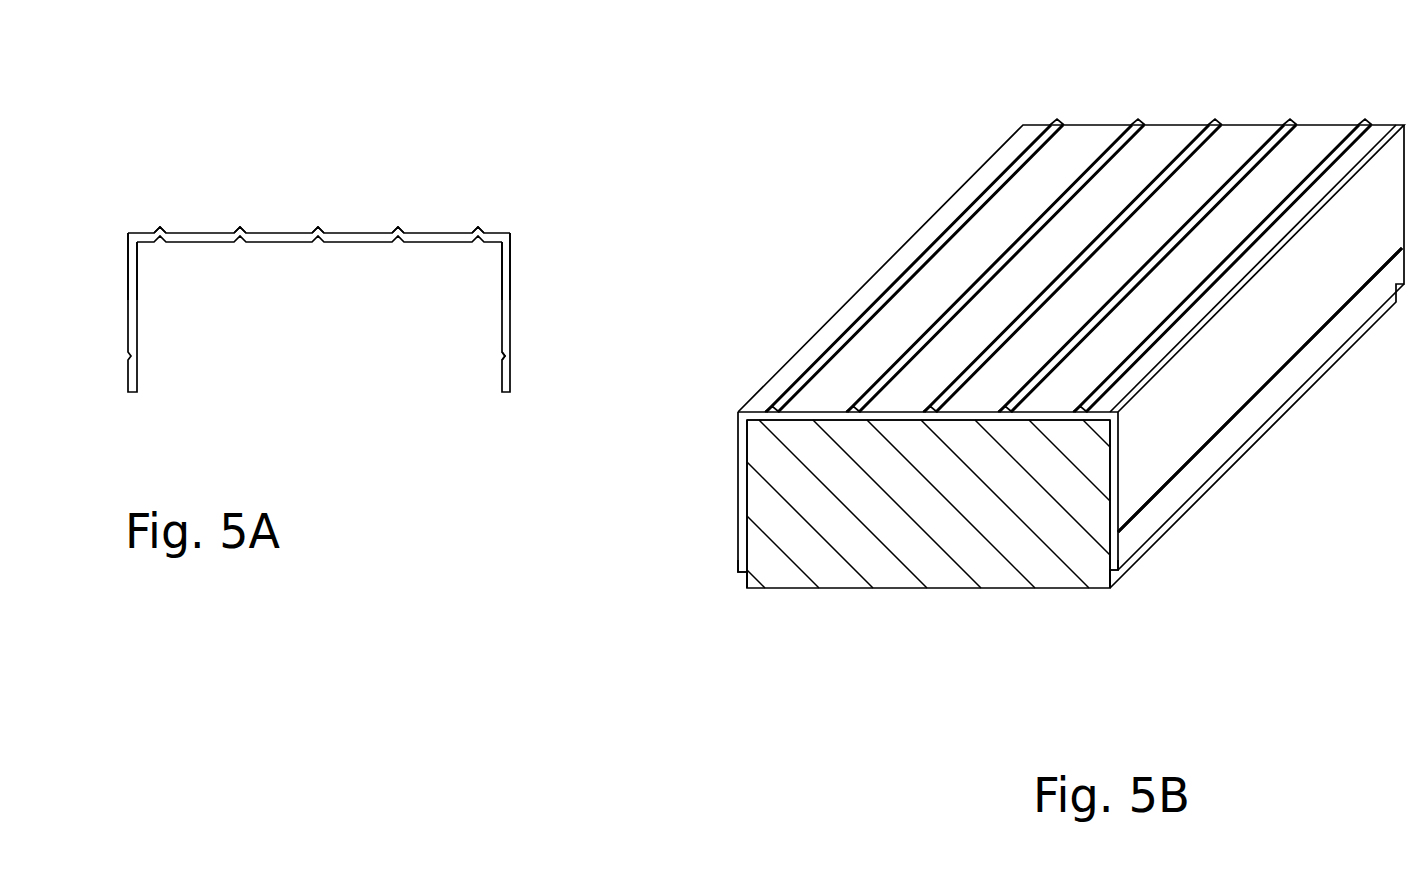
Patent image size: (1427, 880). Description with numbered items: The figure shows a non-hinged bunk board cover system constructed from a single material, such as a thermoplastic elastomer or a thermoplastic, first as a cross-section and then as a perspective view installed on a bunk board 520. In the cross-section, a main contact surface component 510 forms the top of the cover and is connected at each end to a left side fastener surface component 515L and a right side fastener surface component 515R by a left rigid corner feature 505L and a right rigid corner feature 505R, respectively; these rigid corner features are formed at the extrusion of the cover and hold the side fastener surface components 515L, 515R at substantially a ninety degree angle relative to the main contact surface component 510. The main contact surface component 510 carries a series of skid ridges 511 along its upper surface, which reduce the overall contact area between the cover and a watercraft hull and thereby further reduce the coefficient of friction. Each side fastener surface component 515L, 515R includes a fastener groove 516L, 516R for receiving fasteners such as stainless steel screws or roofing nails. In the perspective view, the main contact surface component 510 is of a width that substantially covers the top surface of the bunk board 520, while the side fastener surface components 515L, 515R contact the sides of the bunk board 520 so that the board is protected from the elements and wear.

In FIG. 5A, the main contact surface component 510 is at (362, 231).
In FIG. 5B, the main contact surface component 510 is at (1162, 140).
In FIG. 5A, the skid ridges 511 is at (238, 229).
In FIG. 5B, the skid ridges 511 is at (1210, 119).
In FIG. 5A, the left rigid corner feature 505L is at (138, 245).
In FIG. 5A, the right rigid corner feature 505R is at (500, 244).
In FIG. 5B, the left side fastener surface component 515L is at (736, 463).
In FIG. 5A, the right side fastener surface component 515R is at (513, 299).
In FIG. 5B, the right side fastener surface component 515R is at (1300, 293).
In FIG. 5A, the left fastener groove 516L is at (137, 318).
In FIG. 5B, the left fastener groove 516L is at (736, 533).
In FIG. 5A, the right fastener groove 516R is at (510, 355).
In FIG. 5B, the right fastener groove 516R is at (1143, 507).
In FIG. 5B, the bunk board 520 is at (945, 590).